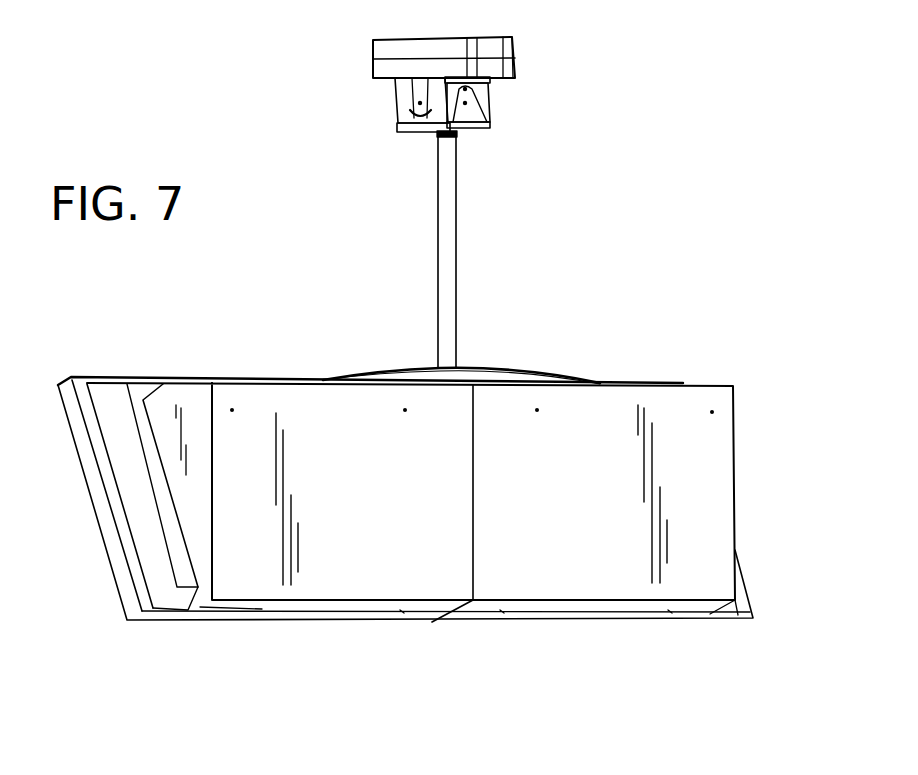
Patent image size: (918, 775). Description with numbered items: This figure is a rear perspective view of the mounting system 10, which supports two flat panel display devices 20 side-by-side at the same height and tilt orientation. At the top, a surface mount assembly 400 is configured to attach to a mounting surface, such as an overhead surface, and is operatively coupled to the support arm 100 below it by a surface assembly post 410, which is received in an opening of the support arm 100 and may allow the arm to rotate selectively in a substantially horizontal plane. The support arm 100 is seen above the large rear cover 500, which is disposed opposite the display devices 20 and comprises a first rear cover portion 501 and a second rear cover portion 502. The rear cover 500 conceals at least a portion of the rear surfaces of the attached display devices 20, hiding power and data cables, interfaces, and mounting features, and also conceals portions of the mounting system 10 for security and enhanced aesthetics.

The mounting system 10 is at (327, 201).
The display device 20 is at (78, 445).
The support arm 100 is at (490, 372).
The surface mount assembly 400 is at (527, 81).
The surface assembly post 410 is at (452, 231).
The rear cover 500 is at (718, 503).
The first rear cover portion 501 is at (370, 583).
The second rear cover portion 502 is at (620, 583).